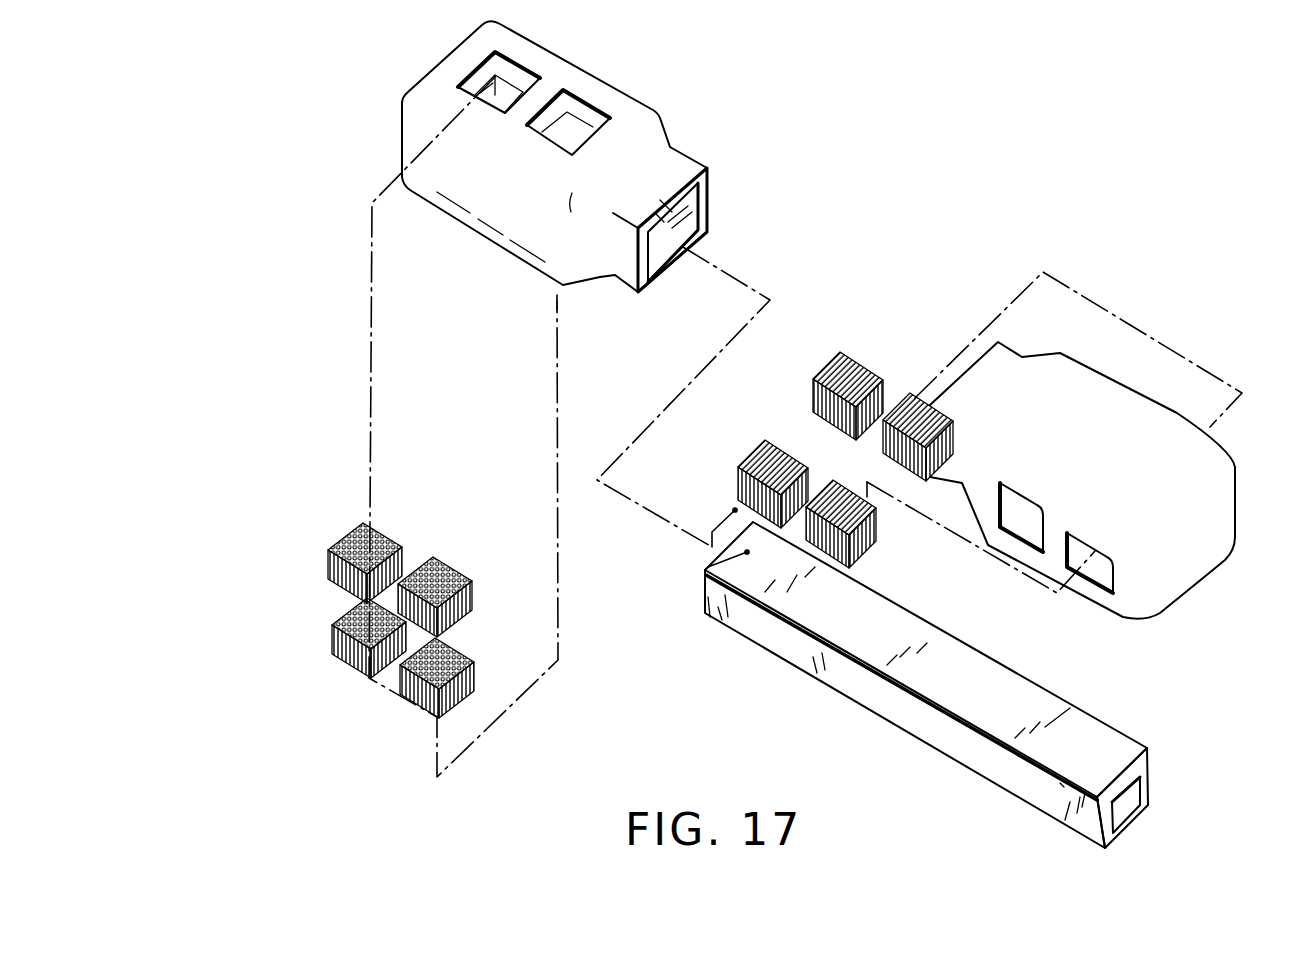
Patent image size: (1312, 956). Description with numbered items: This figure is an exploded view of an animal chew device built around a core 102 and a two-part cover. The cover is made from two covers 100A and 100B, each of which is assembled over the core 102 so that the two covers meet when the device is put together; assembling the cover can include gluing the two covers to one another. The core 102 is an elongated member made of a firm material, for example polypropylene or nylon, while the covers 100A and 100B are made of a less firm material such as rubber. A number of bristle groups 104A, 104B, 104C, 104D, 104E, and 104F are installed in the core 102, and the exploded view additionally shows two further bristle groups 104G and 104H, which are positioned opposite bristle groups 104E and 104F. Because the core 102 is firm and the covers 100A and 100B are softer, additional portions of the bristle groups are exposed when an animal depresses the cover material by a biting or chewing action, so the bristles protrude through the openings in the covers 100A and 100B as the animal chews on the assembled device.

The cover 100A is at (650, 117).
The cover 100B is at (1183, 597).
The core 102 is at (1003, 684).
The bristle group 104A is at (327, 565).
The bristle group 104B is at (460, 578).
The bristle group 104C is at (330, 647).
The bristle group 104D is at (473, 676).
The bristle group 104E is at (738, 472).
The bristle group 104F is at (866, 546).
The bristle group 104G is at (844, 351).
The bristle group 104H is at (913, 390).